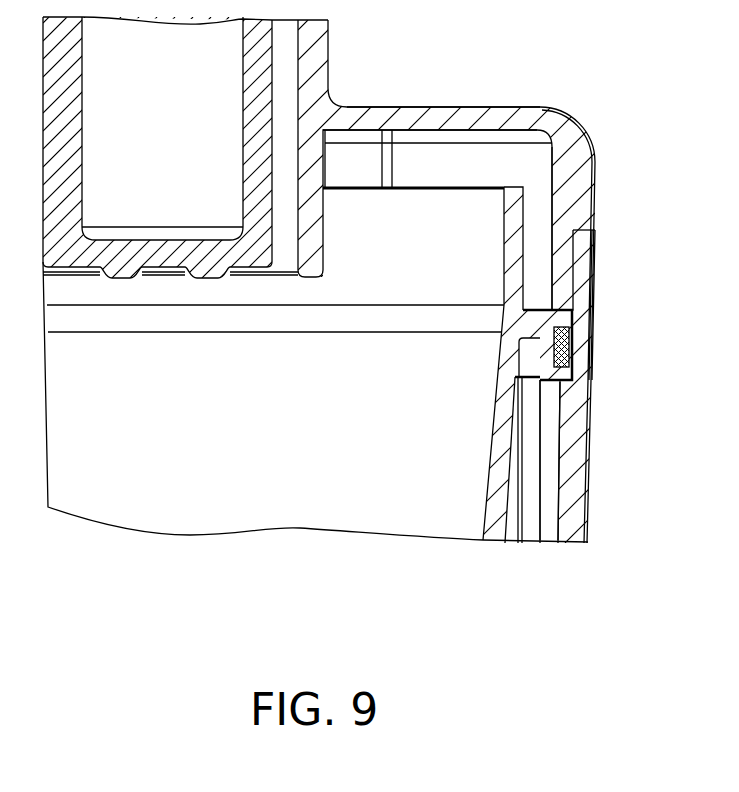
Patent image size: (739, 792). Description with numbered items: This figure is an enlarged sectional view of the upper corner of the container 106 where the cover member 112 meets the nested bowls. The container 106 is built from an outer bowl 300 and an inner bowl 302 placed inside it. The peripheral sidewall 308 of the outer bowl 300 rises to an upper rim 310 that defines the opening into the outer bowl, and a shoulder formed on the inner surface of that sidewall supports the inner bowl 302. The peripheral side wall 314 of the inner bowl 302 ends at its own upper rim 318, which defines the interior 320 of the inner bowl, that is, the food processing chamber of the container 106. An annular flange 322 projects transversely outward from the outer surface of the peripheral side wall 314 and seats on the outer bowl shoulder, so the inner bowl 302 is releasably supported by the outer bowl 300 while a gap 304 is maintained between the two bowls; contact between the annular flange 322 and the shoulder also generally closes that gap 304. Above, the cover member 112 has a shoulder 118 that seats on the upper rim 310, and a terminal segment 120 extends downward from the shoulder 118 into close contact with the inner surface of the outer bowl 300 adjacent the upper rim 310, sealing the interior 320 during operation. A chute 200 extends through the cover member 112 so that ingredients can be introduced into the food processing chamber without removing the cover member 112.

The container 106 is at (590, 500).
The cover member 112 is at (410, 122).
The shoulder 118 is at (595, 257).
The terminal segment 120 is at (593, 290).
The chute 200 is at (313, 83).
The outer bowl 300 is at (590, 465).
The inner bowl 302 is at (514, 527).
The gap 304 is at (551, 446).
The peripheral sidewall 308 is at (590, 398).
The upper rim 310 is at (584, 232).
The peripheral side wall 314 is at (510, 485).
The upper rim 318 is at (527, 186).
The interior 320 is at (313, 409).
The annular flange 322 is at (564, 344).